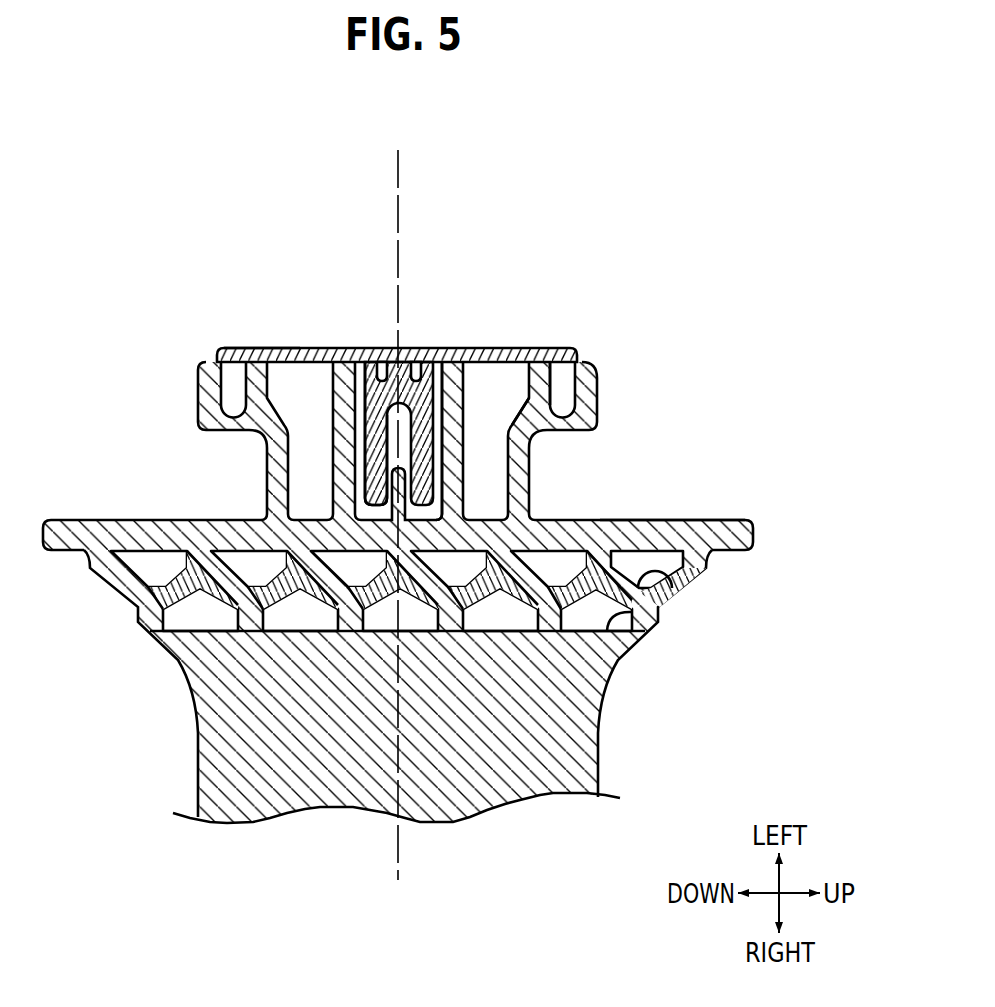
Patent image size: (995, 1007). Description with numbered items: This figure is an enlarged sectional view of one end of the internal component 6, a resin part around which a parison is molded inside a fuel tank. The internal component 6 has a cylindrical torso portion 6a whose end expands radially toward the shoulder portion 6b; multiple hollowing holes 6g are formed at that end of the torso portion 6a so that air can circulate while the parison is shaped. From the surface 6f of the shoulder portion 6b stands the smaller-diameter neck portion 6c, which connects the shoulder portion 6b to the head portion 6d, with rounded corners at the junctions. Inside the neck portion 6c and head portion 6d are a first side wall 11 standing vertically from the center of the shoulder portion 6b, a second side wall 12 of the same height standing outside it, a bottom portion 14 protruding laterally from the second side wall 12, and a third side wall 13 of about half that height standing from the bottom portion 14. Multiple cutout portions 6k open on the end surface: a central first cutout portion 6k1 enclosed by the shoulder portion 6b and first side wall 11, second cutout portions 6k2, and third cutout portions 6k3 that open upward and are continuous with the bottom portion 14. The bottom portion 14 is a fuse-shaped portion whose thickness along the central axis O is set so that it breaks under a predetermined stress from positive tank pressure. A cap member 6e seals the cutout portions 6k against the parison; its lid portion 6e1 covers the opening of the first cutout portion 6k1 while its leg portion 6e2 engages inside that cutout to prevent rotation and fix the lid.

The internal component 6 is at (655, 312).
The torso portion 6a is at (603, 752).
The shoulder portion 6b is at (755, 520).
The neck portion 6c is at (265, 483).
The head portion 6d is at (198, 387).
The cap member 6e is at (275, 345).
The lid portion 6e1 is at (257, 348).
The leg portion 6e2 is at (414, 362).
The surface of the shoulder portion 6f is at (673, 520).
The hollowing holes 6g is at (630, 633).
The cutout portion 6k is at (399, 433).
The first cutout portion 6k1 is at (366, 362).
The second cutout portion 6k2 is at (514, 418).
The third cutout portion 6k3 is at (553, 380).
The first side wall 11 is at (465, 378).
The second side wall 12 is at (522, 477).
The third side wall 13 is at (588, 390).
The bottom portion 14 is at (562, 420).
The central axis O is at (400, 494).